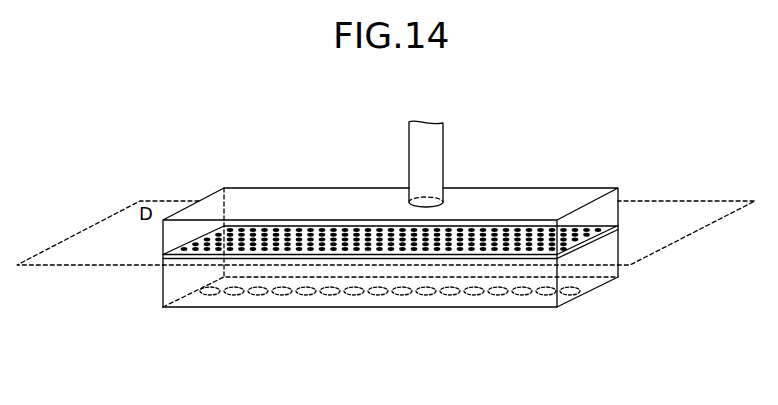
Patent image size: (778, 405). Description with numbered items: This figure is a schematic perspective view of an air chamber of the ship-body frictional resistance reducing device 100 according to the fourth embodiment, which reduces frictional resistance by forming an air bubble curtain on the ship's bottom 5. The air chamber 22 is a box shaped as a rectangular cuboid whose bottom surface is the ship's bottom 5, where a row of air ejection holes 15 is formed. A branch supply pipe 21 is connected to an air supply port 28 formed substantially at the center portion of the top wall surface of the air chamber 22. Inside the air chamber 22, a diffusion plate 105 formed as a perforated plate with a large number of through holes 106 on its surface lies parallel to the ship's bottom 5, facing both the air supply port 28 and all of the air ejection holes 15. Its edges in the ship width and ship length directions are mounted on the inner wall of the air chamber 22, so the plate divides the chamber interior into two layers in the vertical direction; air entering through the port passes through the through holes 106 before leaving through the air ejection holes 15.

The ship-body frictional resistance reducing device 100 is at (409, 226).
The air chamber 22 is at (606, 186).
The branch supply pipe 21 is at (443, 127).
The air supply port 28 is at (433, 209).
The diffusion plate 105 is at (580, 247).
The through hole 106 is at (246, 249).
The air ejection hole 15 is at (493, 297).
The ship's bottom 5 is at (437, 318).